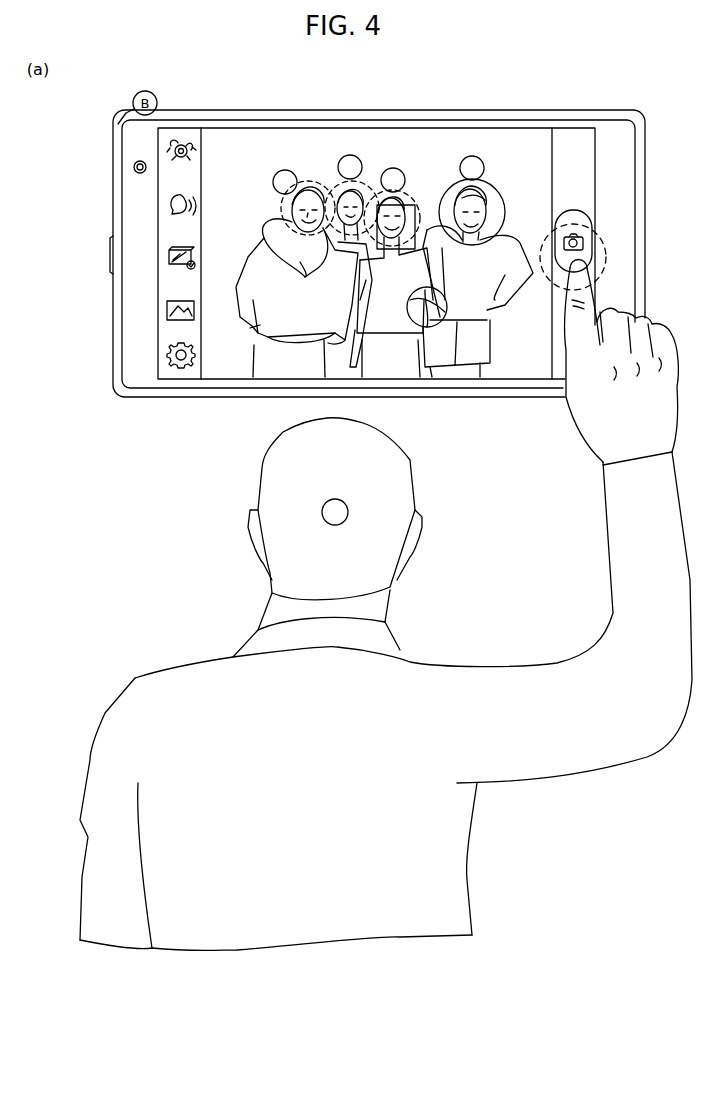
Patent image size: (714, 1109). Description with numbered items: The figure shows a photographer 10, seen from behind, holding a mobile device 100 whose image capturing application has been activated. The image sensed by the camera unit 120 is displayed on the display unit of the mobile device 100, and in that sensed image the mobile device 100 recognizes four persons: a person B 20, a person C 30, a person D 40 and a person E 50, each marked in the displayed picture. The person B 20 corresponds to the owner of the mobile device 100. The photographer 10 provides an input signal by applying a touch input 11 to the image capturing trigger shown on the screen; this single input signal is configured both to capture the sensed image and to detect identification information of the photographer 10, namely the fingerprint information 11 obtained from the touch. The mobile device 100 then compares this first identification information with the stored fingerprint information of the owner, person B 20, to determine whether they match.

The photographer 10 is at (168, 692).
The touch input 11 is at (588, 296).
The person B 20 is at (453, 176).
The person C 30 is at (298, 180).
The person D 40 is at (373, 187).
The person E 50 is at (345, 157).
The mobile device 100 is at (568, 110).
The camera unit 120 is at (138, 160).